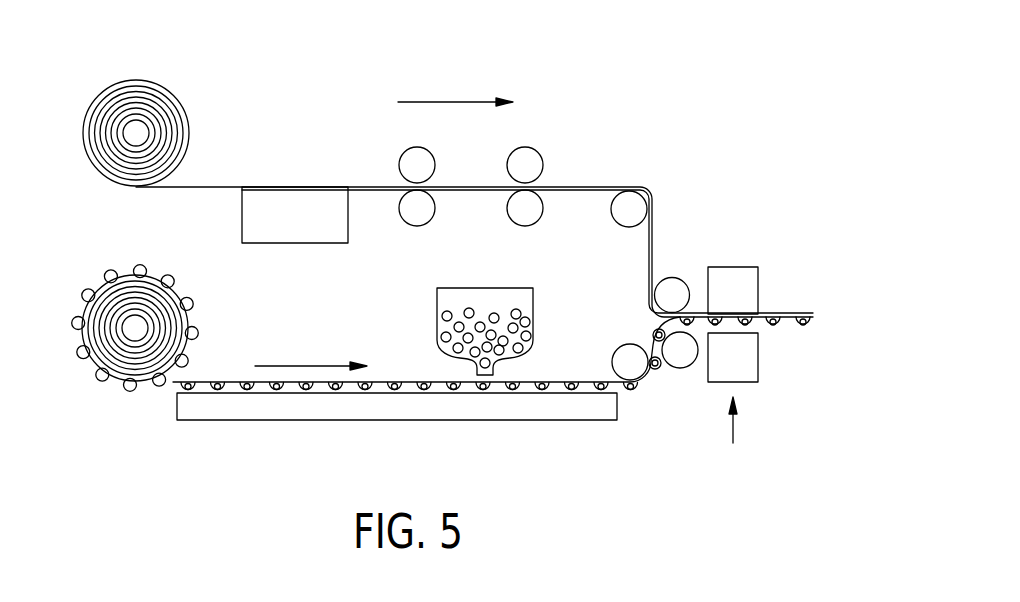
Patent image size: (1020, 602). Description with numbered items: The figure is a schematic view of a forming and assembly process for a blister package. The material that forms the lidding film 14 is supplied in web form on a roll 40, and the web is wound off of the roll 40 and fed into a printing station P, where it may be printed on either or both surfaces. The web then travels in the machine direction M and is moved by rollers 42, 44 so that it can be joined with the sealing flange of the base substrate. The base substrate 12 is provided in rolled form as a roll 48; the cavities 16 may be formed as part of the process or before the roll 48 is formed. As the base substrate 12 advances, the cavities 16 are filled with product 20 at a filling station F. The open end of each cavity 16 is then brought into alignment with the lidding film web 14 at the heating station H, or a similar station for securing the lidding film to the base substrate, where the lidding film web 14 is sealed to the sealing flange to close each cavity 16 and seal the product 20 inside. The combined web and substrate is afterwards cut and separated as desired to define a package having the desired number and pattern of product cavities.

The roll 40 is at (167, 102).
The lidding film 14 is at (217, 187).
The printing station P is at (312, 243).
The machine direction M is at (444, 102).
The roller 42 is at (377, 157).
The roller 44 is at (575, 157).
The roll 48 is at (152, 292).
The base substrate 12 is at (232, 380).
The cavities 16 is at (250, 392).
The filling station F is at (533, 300).
The product 20 is at (471, 308).
The heating station H is at (732, 277).